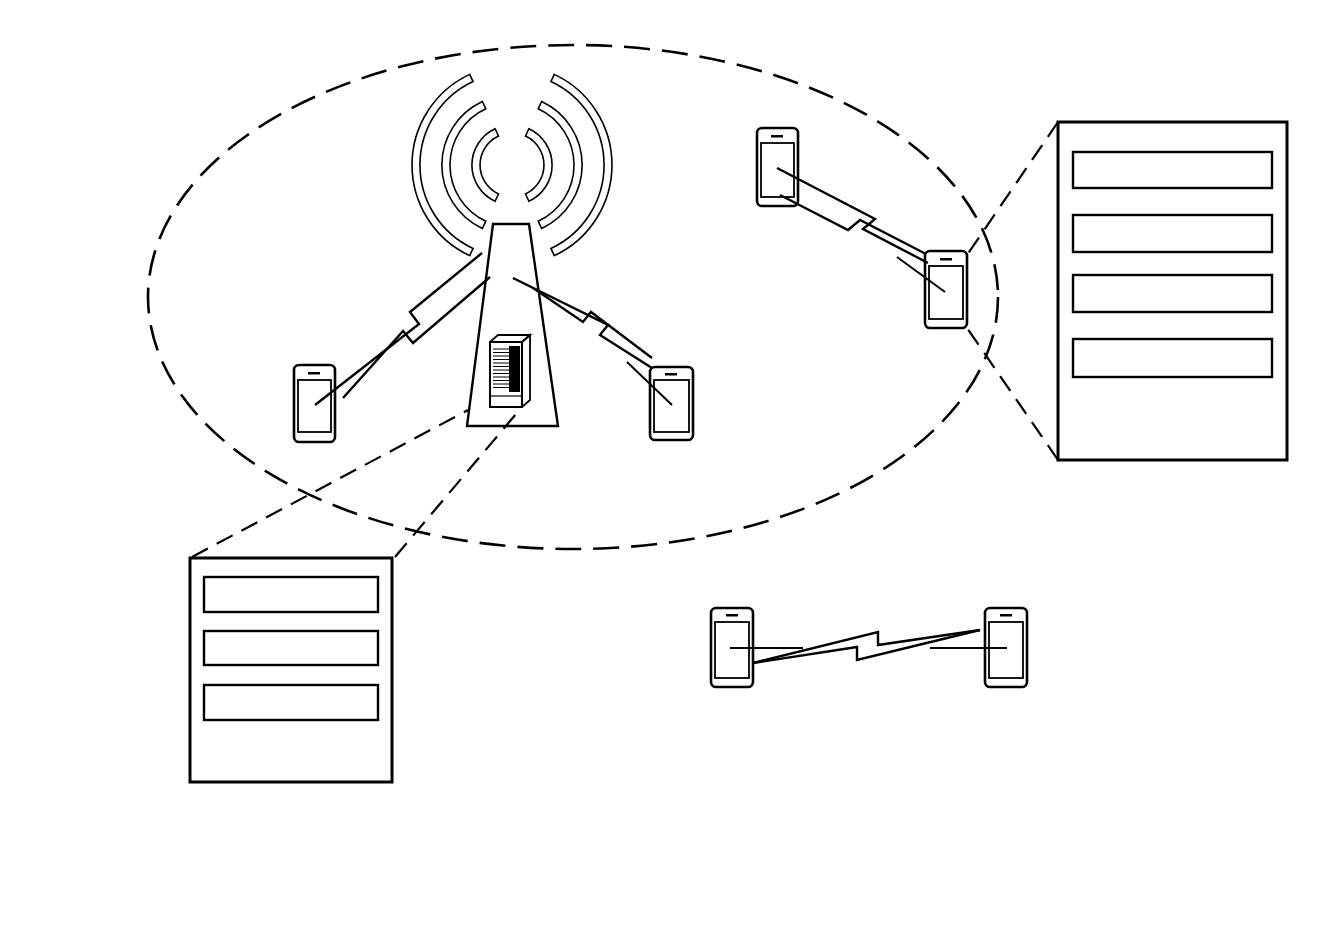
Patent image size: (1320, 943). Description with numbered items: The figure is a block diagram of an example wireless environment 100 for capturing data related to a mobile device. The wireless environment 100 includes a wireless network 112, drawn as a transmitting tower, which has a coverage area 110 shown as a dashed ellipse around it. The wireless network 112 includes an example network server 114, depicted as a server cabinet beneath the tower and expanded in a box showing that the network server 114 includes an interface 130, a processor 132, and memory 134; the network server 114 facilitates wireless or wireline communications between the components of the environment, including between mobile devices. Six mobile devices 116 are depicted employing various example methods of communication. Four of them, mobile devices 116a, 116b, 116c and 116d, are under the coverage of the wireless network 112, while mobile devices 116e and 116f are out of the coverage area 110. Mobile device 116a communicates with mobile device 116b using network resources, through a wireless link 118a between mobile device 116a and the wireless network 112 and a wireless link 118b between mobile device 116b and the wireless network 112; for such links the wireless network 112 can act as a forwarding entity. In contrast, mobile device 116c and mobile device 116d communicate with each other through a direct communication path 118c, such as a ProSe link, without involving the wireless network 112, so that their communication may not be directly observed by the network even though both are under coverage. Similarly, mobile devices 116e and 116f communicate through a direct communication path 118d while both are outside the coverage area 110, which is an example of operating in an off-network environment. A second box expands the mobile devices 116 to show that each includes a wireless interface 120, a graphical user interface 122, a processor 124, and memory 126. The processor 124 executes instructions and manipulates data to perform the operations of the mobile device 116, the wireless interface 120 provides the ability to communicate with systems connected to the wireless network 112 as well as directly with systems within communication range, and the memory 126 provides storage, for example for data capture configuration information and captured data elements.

The wireless environment 100 is at (1225, 771).
The coverage area 110 is at (268, 112).
The wireless network 112 is at (494, 430).
The network server 114 is at (360, 558).
The mobile device 116 is at (1127, 291).
The mobile device 116a is at (314, 419).
The mobile device 116b is at (660, 417).
The mobile device 116c is at (778, 182).
The mobile device 116d is at (932, 304).
The mobile device 116e is at (757, 663).
The mobile device 116f is at (978, 663).
The wireless link 118a is at (398, 322).
The wireless link 118b is at (648, 353).
The direct communication path 118c is at (893, 211).
The direct communication path 118d is at (870, 644).
The wireless interface 120 is at (1172, 358).
The graphical user interface 122 is at (1172, 293).
The processor 124 is at (1172, 233).
The memory 126 is at (1172, 170).
The interface 130 is at (291, 702).
The processor 132 is at (291, 648).
The memory 134 is at (291, 594).